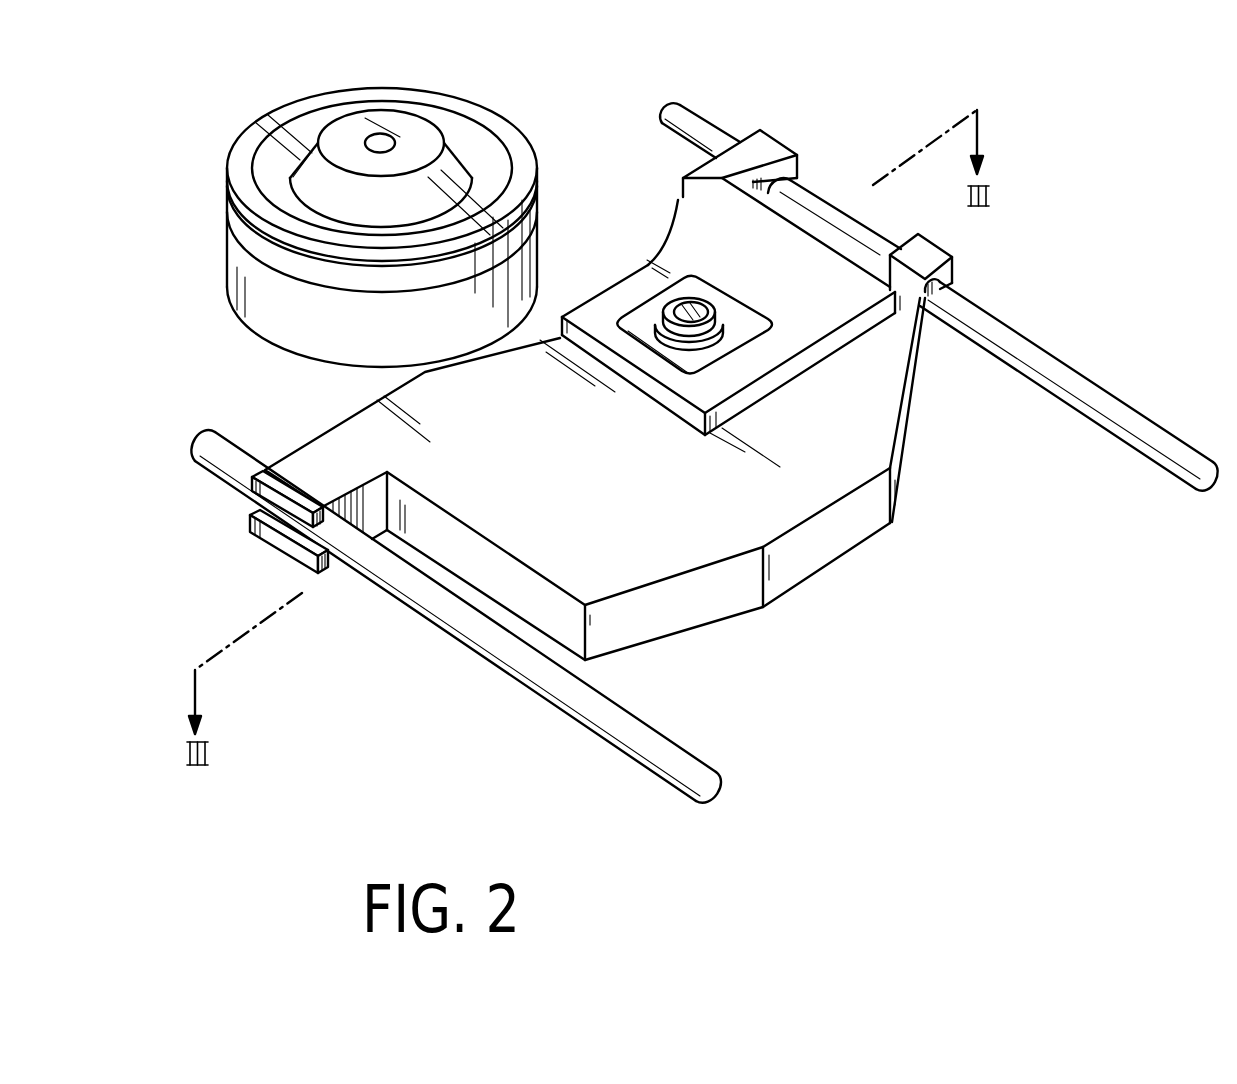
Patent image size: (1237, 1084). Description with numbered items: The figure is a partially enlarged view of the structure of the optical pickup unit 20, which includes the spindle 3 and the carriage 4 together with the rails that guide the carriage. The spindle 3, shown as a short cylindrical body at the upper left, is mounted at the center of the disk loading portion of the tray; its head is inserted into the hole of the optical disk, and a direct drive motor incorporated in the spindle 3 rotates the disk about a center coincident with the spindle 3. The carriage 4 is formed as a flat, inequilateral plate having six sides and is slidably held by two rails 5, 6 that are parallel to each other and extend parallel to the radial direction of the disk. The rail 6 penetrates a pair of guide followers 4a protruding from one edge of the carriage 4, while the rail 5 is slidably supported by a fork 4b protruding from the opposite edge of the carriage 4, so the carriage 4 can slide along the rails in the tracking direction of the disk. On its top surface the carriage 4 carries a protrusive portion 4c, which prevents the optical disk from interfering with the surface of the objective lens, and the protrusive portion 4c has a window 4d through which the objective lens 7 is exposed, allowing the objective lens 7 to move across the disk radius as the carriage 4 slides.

The spindle 3 is at (258, 138).
The carriage 4 is at (893, 407).
The guide followers 4a is at (767, 140).
The fork 4b is at (308, 490).
The protrusive portion 4c is at (684, 197).
The window 4d is at (636, 327).
The rail 5 is at (503, 650).
The rail 6 is at (1130, 418).
The objective lens 7 is at (702, 306).
The optical pickup unit 20 is at (869, 640).